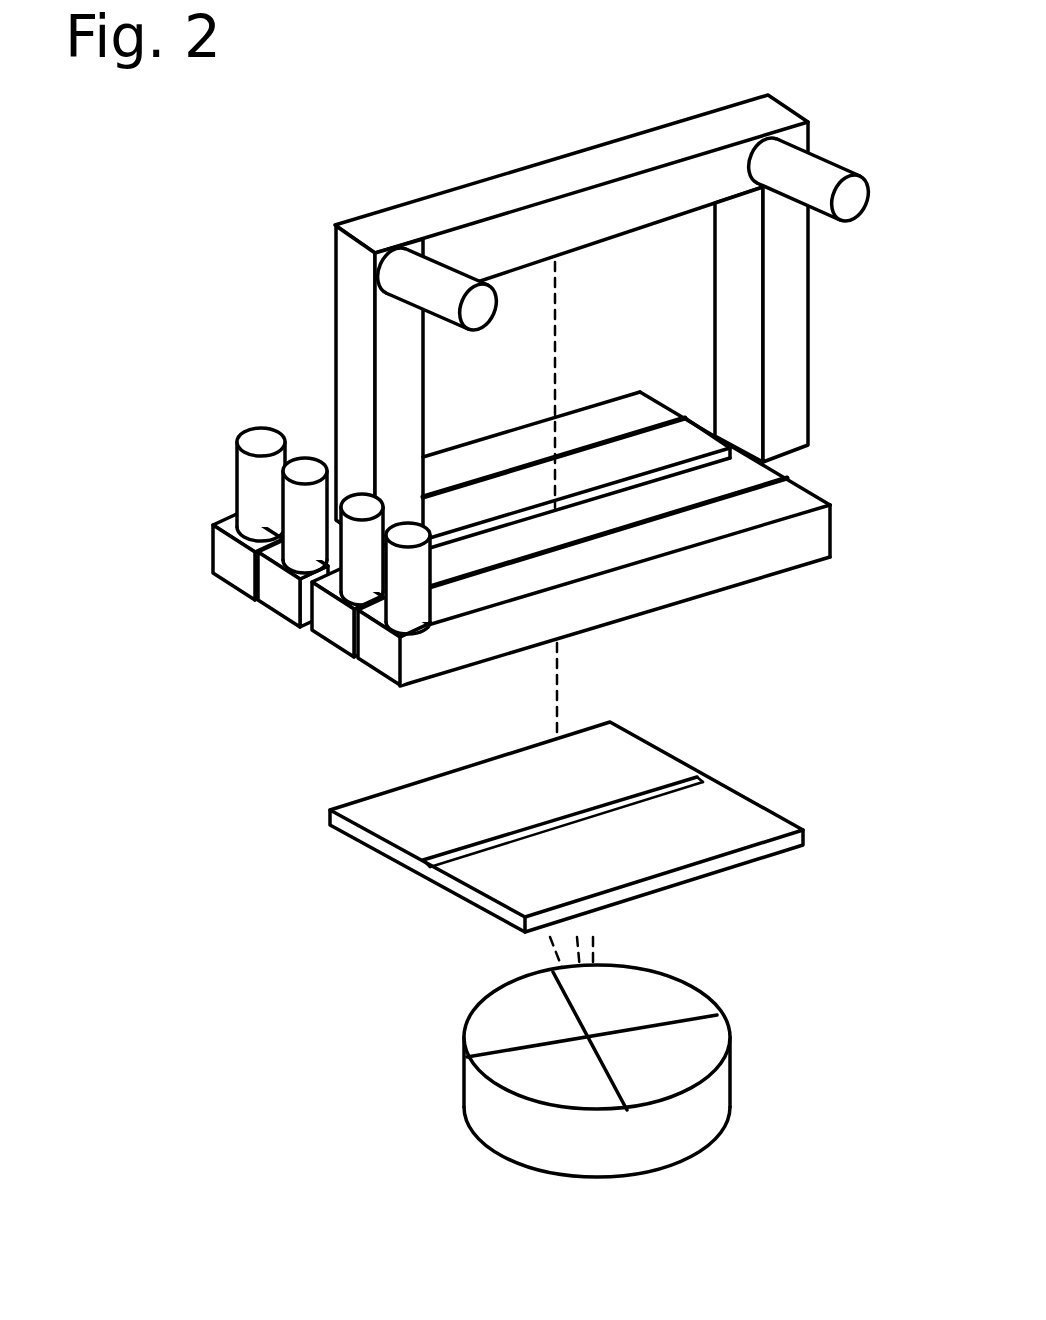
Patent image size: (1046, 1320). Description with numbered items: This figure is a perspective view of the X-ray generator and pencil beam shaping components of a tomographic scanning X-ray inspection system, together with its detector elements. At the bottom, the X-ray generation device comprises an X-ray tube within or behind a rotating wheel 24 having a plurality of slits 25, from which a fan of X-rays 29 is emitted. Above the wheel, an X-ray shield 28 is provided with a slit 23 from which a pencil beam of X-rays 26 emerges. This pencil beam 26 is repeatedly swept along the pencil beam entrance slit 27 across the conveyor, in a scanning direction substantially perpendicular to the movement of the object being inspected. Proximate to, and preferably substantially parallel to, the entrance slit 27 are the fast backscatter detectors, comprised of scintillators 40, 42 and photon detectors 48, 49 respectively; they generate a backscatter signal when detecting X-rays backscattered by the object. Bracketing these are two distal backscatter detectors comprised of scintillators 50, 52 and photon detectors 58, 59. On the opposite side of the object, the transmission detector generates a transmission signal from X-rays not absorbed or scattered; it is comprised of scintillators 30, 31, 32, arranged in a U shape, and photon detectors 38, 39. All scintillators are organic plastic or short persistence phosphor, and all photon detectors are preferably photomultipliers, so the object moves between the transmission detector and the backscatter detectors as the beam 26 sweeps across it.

The slit 23 is at (637, 800).
The rotating wheel 24 is at (728, 1063).
The slits 25 is at (642, 1025).
The pencil beam of X-rays 26 is at (558, 372).
The pencil beam entrance slit 27 is at (502, 522).
The X-ray shield 28 is at (732, 820).
The fan of X-rays 29 is at (563, 942).
The scintillator 30 is at (590, 170).
The scintillator 31 is at (357, 357).
The scintillator 32 is at (778, 372).
The photon detector 38 is at (452, 280).
The photon detector 39 is at (855, 197).
The scintillator 40 is at (333, 622).
The scintillator 42 is at (283, 590).
The photon detector 48 is at (365, 572).
The photon detector 49 is at (307, 518).
The scintillator 50 is at (385, 651).
The scintillator 52 is at (227, 562).
The photon detector 58 is at (410, 565).
The photon detector 59 is at (250, 477).